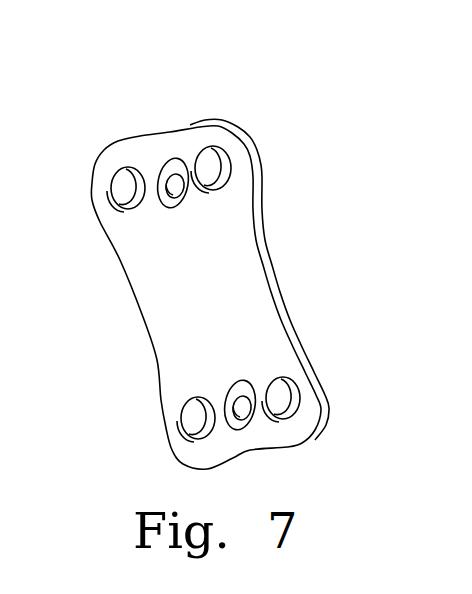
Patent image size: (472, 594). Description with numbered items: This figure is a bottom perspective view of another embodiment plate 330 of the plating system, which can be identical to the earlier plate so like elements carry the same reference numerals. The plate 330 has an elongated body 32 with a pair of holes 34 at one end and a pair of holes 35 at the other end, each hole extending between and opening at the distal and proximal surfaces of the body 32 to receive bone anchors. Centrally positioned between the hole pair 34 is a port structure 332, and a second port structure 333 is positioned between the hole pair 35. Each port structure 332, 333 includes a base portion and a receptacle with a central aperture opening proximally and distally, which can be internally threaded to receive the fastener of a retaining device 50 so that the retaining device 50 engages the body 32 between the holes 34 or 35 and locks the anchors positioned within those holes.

The plate 330 is at (131, 118).
The elongated body 32 is at (265, 208).
The hole 34 is at (127, 192).
The retaining device 50 is at (218, 179).
The port structure 332 is at (178, 152).
The hole 35 is at (195, 418).
The second port structure 333 is at (249, 378).